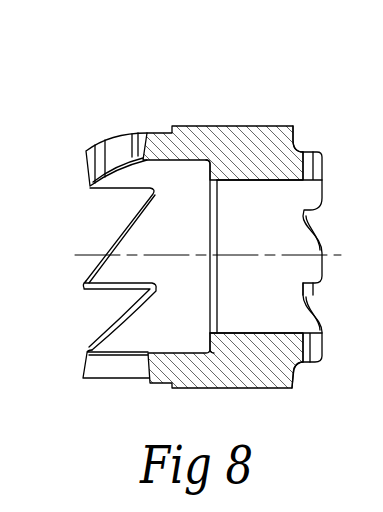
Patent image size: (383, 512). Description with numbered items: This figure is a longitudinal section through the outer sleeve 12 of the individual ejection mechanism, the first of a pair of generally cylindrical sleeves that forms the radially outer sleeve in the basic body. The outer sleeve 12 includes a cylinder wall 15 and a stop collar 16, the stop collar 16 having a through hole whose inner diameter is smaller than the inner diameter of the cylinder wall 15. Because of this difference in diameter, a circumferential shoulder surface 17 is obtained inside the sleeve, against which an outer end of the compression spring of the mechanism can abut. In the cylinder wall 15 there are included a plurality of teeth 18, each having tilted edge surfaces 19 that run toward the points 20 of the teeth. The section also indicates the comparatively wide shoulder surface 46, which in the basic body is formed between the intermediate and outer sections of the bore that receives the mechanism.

The outer sleeve 12 is at (230, 110).
The cylinder wall 15 is at (160, 147).
The stop collar 16 is at (267, 147).
The shoulder surface 17 is at (203, 176).
The teeth 18 is at (89, 150).
The tilted edge surfaces 19 is at (127, 229).
The points 20 is at (83, 290).
The shoulder surface 46 is at (175, 386).